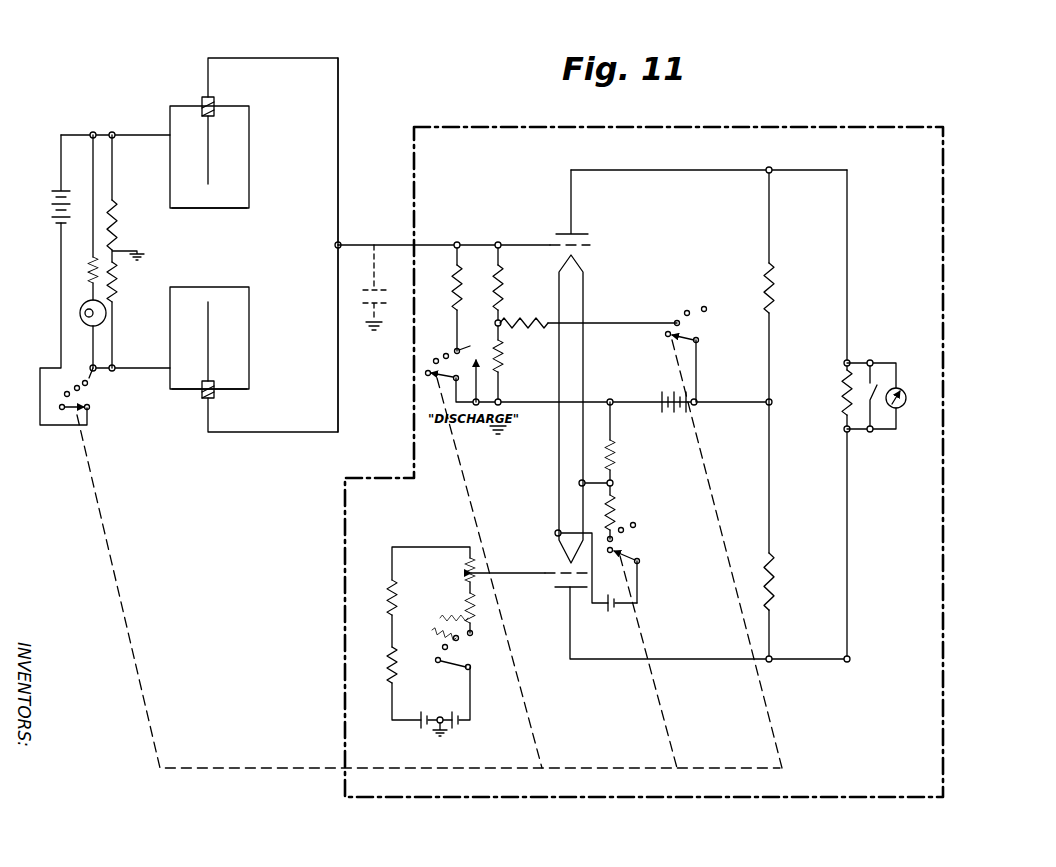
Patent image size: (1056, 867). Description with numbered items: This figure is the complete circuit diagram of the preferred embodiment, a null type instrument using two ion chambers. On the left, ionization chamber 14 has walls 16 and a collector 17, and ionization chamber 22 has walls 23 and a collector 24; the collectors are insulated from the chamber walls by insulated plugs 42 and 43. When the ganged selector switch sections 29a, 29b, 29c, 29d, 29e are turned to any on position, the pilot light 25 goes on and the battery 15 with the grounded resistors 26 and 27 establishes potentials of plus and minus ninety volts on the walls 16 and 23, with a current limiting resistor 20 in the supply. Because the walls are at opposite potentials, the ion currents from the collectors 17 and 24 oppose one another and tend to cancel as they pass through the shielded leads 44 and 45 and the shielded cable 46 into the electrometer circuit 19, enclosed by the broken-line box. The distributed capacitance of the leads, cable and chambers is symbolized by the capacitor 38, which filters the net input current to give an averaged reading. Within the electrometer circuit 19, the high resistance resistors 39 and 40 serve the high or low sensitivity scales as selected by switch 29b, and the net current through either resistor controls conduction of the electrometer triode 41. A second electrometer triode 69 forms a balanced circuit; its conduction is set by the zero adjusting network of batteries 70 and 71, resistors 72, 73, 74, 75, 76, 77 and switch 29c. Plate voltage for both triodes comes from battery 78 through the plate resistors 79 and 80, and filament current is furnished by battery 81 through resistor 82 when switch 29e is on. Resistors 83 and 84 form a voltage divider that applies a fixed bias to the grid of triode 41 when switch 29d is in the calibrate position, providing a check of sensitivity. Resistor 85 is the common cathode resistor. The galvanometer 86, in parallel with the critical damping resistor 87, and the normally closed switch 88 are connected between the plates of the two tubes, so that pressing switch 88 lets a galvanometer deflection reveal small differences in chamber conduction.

The ionization chamber 14 is at (254, 128).
The battery 15 is at (52, 198).
The walls 16 is at (214, 208).
The collector 17 is at (209, 152).
The electrometer circuit 19 is at (950, 198).
The current limiting resistor 20 is at (81, 217).
The ionization chamber 22 is at (254, 318).
The walls 23 is at (225, 392).
The collector 24 is at (209, 339).
The pilot light 25 is at (81, 322).
The grounded resistor 26 is at (114, 212).
The grounded resistor 27 is at (116, 296).
The switch 29a is at (76, 404).
The selector switch 29b is at (431, 357).
The switch 29c is at (450, 651).
The switch 29d is at (697, 327).
The switch 29e is at (618, 549).
The capacitor 38 is at (379, 287).
The high resistance resistor 39 is at (461, 282).
The high resistance resistor 40 is at (502, 276).
The electrometer triode 41 is at (585, 237).
The insulated plug 42 is at (206, 98).
The insulated plug 43 is at (200, 398).
The shielded lead 44 is at (337, 201).
The shielded lead 45 is at (337, 292).
The shielded cable 46 is at (363, 244).
The electrometer triode 69 is at (562, 577).
The battery 70 is at (423, 714).
The battery 71 is at (459, 709).
The resistor 72 is at (395, 668).
The resistor 73 is at (395, 604).
The resistor 74 is at (473, 573).
The resistor 75 is at (474, 605).
The resistor 76 is at (458, 619).
The resistor 77 is at (432, 639).
The battery 78 is at (675, 393).
The plate resistor 79 is at (765, 277).
The plate resistor 80 is at (765, 573).
The battery 81 is at (620, 596).
The resistor 82 is at (613, 505).
The resistor 83 is at (528, 333).
The resistor 84 is at (509, 374).
The cathode resistor 85 is at (612, 441).
The galvanometer 86 is at (903, 389).
The critical damping resistor 87 is at (845, 431).
The normally closed switch 88 is at (871, 372).